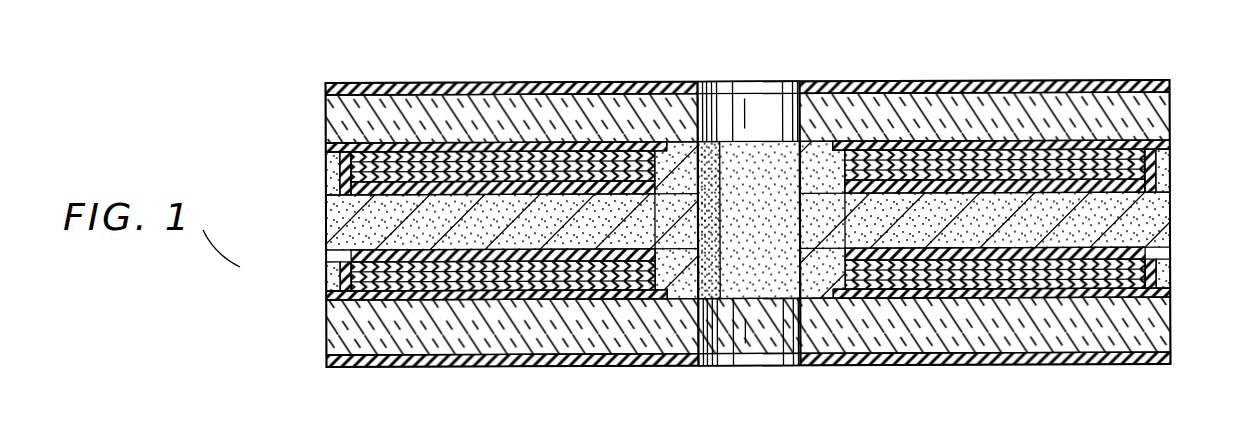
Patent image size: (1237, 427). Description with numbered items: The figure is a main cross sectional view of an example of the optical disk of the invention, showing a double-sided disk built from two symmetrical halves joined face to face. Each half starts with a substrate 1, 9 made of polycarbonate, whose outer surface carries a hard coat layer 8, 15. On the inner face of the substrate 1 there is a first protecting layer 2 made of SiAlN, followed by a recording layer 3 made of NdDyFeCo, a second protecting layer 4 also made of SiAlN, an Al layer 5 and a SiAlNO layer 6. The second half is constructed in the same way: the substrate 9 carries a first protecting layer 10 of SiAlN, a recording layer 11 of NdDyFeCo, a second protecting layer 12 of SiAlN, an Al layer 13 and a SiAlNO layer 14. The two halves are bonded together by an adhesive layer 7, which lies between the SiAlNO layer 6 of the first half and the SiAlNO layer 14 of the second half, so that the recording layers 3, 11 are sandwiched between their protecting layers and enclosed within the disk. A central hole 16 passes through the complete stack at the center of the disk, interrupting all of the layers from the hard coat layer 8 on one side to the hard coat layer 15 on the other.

The substrate 1 is at (1172, 102).
The first protecting layer 2 is at (1170, 141).
The recording layer 3 is at (1160, 153).
The second protecting layer 4 is at (1166, 170).
The Al layer 5 is at (1170, 192).
The SiAlNO layer 6 is at (1170, 222).
The adhesive layer 7 is at (340, 205).
The hard coat layer 8 is at (1172, 83).
The substrate 9 is at (350, 366).
The first protecting layer 10 is at (355, 308).
The recording layer 11 is at (345, 296).
The second protecting layer 12 is at (345, 281).
The Al layer 13 is at (345, 268).
The SiAlNO layer 14 is at (345, 257).
The hard coat layer 15 is at (427, 366).
The central hole 16 is at (727, 352).